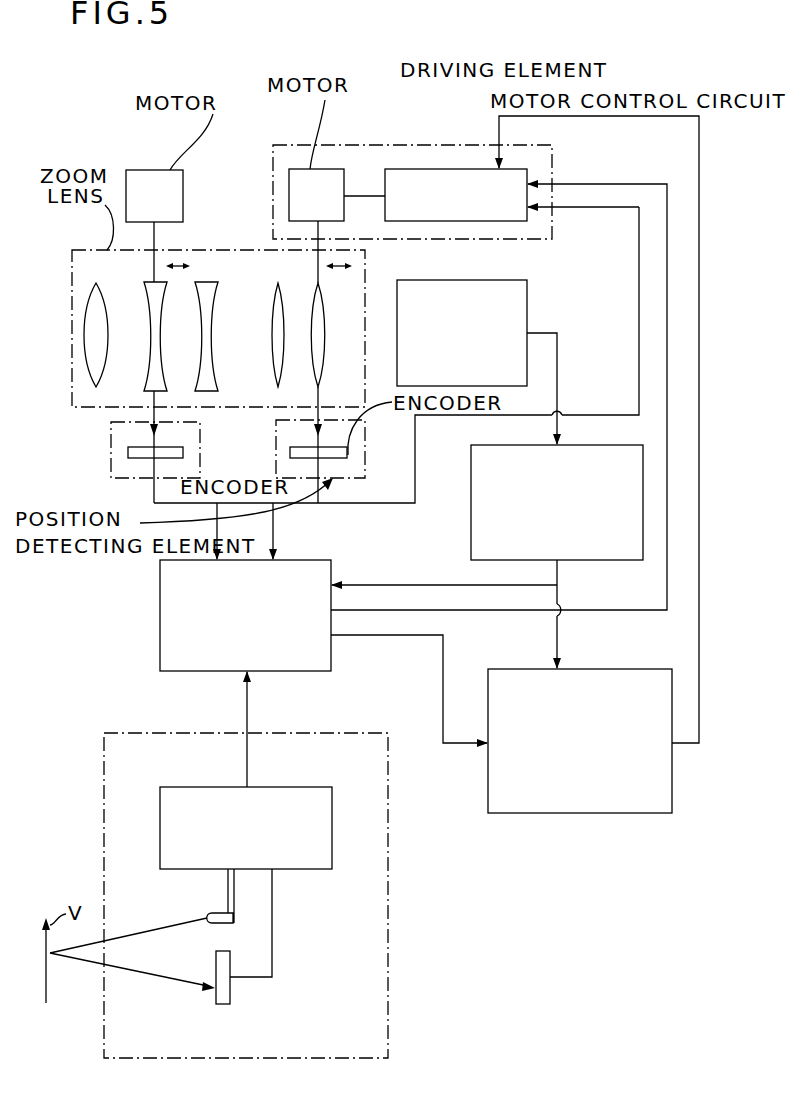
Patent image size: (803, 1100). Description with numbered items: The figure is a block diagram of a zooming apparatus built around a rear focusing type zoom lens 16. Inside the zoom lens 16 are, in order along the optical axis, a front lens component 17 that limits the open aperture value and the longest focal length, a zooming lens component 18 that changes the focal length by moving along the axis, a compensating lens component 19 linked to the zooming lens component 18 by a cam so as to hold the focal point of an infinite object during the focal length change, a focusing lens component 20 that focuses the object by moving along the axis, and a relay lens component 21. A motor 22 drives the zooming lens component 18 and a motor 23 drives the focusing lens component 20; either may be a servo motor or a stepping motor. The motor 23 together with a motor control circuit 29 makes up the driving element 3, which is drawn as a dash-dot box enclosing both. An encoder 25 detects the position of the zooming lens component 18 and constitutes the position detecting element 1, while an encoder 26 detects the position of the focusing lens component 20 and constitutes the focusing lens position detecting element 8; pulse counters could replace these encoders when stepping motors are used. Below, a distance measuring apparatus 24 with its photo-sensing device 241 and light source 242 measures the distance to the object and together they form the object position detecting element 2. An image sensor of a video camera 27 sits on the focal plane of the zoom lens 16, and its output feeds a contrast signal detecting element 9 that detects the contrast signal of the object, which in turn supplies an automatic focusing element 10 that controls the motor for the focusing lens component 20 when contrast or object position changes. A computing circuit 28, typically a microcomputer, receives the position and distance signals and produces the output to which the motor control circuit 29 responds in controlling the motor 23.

The position detecting element 1 is at (111, 466).
The object position detecting element 2 is at (388, 836).
The driving element 3 is at (347, 142).
The focusing lens position detecting element 8 is at (276, 462).
The contrast signal detecting element 9 is at (471, 470).
The automatic focusing element 10 is at (615, 669).
The rear focusing type zoom lens 16 is at (107, 249).
The front lens component 17 is at (102, 306).
The zooming lens component 18 is at (164, 290).
The compensating lens component 19 is at (215, 322).
The focusing lens component 20 is at (324, 322).
The relay lens component 21 is at (283, 306).
The motor 22 is at (166, 170).
The motor 23 is at (300, 169).
The distance measuring apparatus 24 is at (312, 787).
The photo-sensing device 241 is at (231, 967).
The light source 242 is at (208, 917).
The encoder 25 is at (205, 478).
The encoder 26 is at (348, 452).
The video camera 27 is at (528, 297).
The computing circuit 28 is at (333, 578).
The motor control circuit 29 is at (456, 169).